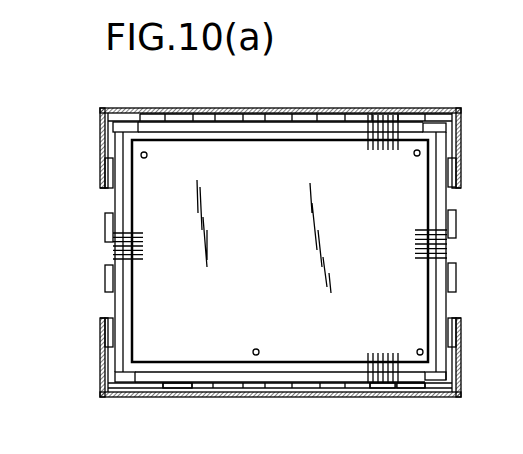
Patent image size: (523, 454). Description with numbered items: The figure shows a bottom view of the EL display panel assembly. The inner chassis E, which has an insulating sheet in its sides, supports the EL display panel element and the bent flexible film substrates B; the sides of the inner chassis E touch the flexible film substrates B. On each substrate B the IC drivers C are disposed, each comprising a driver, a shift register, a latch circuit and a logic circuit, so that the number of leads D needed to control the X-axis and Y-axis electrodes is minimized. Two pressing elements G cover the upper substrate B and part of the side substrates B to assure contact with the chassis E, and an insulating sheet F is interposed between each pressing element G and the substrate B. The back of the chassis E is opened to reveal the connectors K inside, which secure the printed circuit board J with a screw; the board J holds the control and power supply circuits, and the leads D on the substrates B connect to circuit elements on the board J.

The flexible film substrate B is at (408, 388).
The IC driver C is at (110, 223).
The leads D is at (402, 157).
The inner chassis E is at (430, 385).
The insulating sheet F is at (452, 190).
The pressing element G is at (462, 183).
The printed circuit board J is at (412, 213).
The connectors K is at (256, 355).